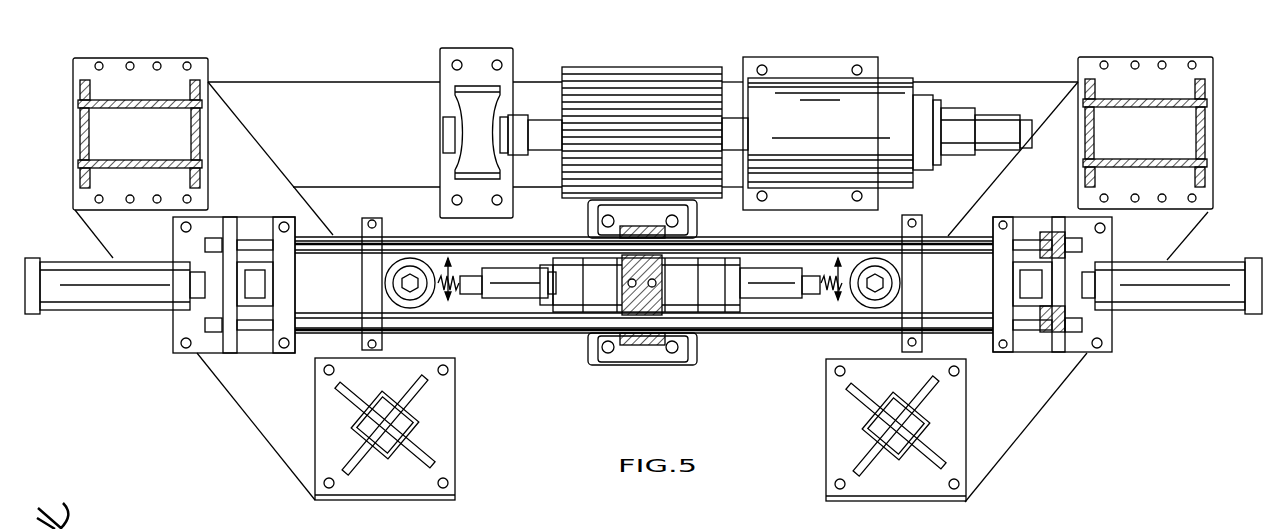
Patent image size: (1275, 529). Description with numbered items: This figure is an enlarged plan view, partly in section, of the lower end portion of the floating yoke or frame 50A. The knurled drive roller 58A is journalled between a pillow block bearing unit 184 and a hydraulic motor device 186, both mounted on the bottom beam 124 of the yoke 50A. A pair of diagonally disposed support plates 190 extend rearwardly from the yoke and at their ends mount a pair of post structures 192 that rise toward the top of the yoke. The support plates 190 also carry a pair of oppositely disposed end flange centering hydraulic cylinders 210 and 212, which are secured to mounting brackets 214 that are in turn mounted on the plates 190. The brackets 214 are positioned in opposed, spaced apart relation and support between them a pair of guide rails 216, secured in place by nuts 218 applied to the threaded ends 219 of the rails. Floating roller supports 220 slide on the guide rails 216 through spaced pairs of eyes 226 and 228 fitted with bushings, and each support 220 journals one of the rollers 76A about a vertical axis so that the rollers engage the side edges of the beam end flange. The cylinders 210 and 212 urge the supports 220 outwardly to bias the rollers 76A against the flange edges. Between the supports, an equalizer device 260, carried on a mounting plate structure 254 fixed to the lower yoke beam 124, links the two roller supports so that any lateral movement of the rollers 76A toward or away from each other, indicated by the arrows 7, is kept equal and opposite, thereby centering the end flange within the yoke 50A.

The yoke or frame 50A is at (128, 362).
The knurled drive roller 58A is at (656, 86).
The rollers 76A is at (406, 250).
The adjustment direction 7 is at (640, 290).
The bottom beam 124 is at (1017, 93).
The pillow block bearing unit 184 is at (432, 153).
The hydraulic motor device 186 is at (895, 95).
The support plates 190 is at (262, 420).
The post structures 192 is at (426, 435).
The end flange centering hydraulic cylinder 210 is at (1193, 297).
The end flange centering hydraulic cylinder 212 is at (90, 287).
The mounting brackets 214 is at (1060, 355).
The guide rails 216 is at (786, 237).
The nuts 218 is at (212, 343).
The threaded ends 219 is at (205, 345).
The floating roller supports 220 is at (305, 298).
The eyes 226 is at (925, 222).
The eyes 228 is at (1012, 228).
The mounting plate structure 254 is at (695, 350).
The equalizer device 260 is at (595, 320).